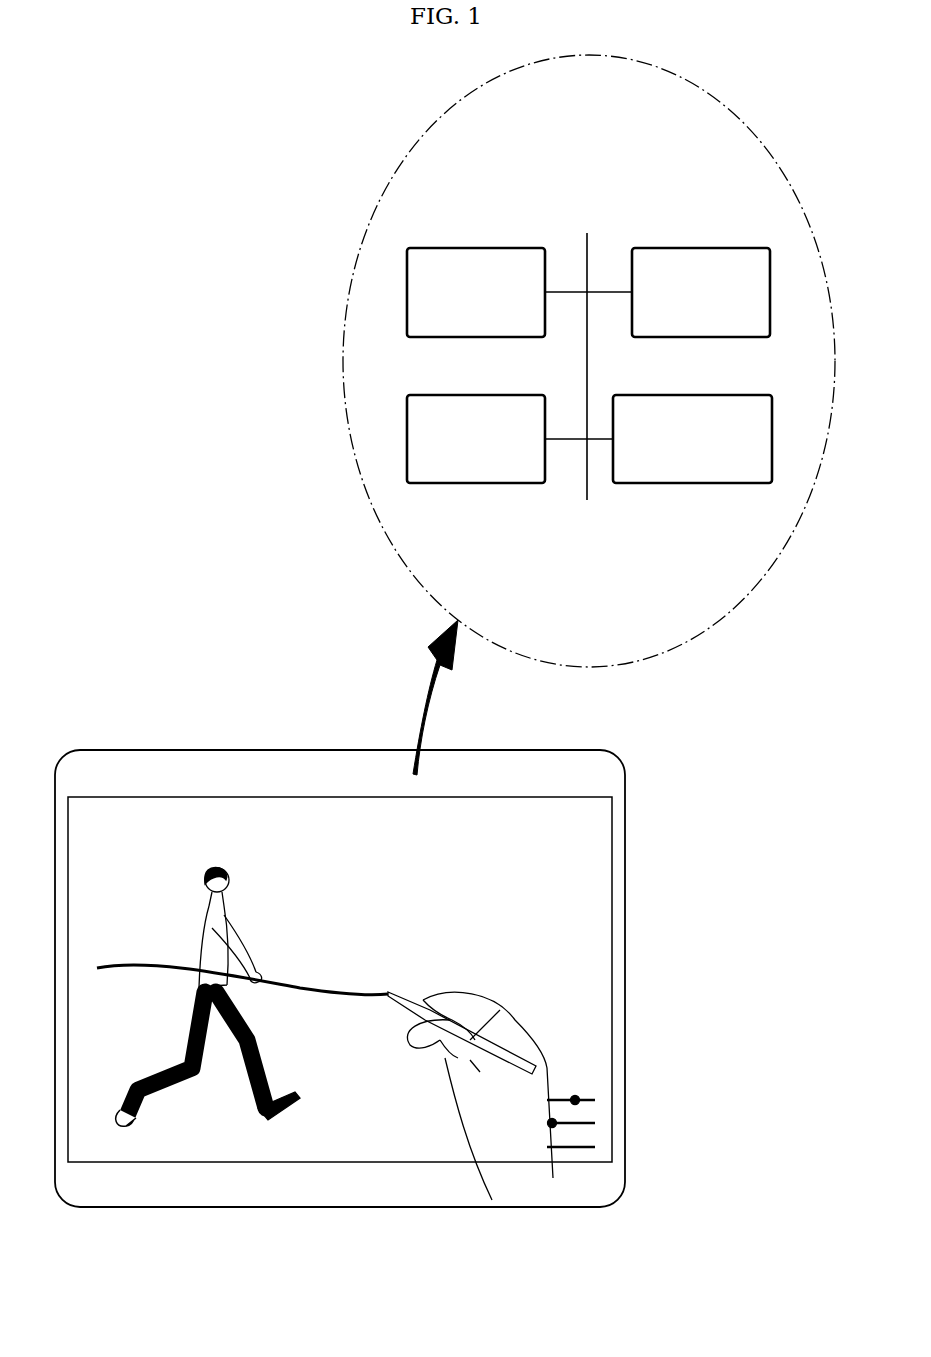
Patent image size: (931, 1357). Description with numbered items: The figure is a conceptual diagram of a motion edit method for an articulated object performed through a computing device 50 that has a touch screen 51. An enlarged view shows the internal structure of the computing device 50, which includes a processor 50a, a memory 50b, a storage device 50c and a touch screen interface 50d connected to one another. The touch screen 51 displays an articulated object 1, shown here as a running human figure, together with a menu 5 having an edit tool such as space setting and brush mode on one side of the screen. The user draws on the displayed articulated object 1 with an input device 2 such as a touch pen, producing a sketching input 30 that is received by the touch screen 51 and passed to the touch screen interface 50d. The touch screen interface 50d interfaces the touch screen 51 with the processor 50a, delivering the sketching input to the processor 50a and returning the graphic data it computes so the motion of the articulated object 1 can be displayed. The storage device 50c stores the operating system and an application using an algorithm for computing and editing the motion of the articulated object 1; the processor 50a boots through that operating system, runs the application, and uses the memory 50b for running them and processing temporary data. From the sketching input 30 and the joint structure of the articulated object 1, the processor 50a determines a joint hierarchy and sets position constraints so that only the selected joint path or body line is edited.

The articulated object 1 is at (190, 916).
The input device 2 is at (505, 1012).
The menu 5 is at (577, 1068).
The sketching input 30 is at (335, 976).
The computing device 50 is at (137, 750).
The touch screen 51 is at (178, 824).
The processor 50a is at (483, 248).
The memory 50b is at (671, 248).
The storage device 50c is at (522, 483).
The touch screen interface 50d is at (640, 483).